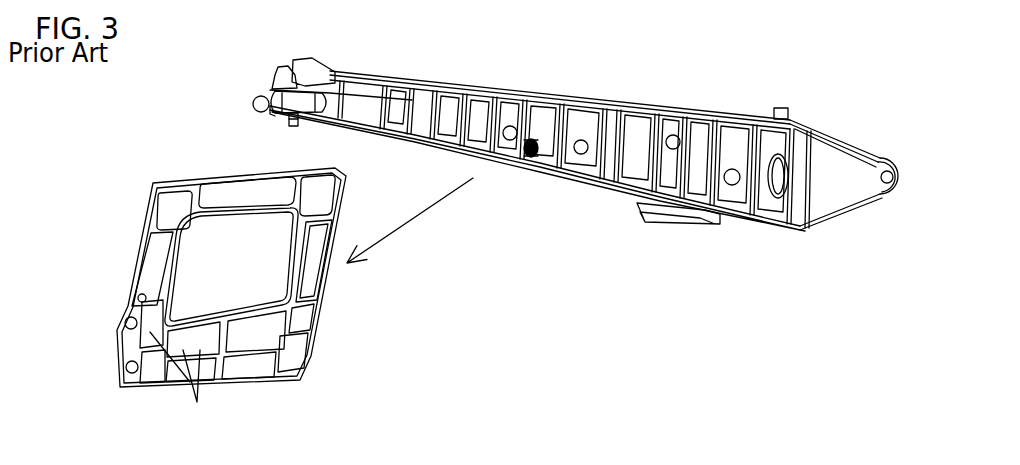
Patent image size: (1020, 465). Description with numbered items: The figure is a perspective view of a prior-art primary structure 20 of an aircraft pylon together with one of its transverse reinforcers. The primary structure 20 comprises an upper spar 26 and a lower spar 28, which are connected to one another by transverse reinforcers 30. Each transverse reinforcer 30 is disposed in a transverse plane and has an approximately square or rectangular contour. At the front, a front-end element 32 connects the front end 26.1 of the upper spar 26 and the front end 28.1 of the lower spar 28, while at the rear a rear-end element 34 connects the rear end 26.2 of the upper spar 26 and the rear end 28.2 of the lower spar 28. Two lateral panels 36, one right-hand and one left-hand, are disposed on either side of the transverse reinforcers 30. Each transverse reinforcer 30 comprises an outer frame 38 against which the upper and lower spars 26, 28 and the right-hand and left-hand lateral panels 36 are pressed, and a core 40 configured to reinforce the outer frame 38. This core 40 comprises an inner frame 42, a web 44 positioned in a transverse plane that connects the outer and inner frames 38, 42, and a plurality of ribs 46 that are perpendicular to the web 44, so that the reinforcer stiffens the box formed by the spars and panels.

The primary structure 20 is at (757, 97).
The upper spar 26 is at (550, 83).
The front end of the upper spar 26.1 is at (336, 72).
The rear end of the upper spar 26.2 is at (790, 116).
The lower spar 28 is at (572, 189).
The front end of the lower spar 28.1 is at (332, 120).
The rear end of the lower spar 28.2 is at (735, 216).
The transverse reinforcer 30 is at (413, 80).
The front-end element 32 is at (262, 78).
The rear-end element 34 is at (853, 138).
The lateral panel 36 is at (548, 150).
The outer frame 38 is at (143, 207).
The core 40 is at (238, 188).
The inner frame 42 is at (307, 265).
The web 44 is at (240, 372).
The rib 46 is at (197, 403).